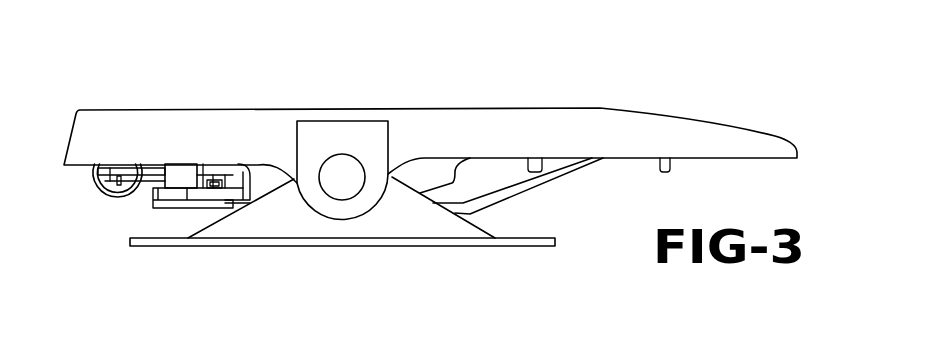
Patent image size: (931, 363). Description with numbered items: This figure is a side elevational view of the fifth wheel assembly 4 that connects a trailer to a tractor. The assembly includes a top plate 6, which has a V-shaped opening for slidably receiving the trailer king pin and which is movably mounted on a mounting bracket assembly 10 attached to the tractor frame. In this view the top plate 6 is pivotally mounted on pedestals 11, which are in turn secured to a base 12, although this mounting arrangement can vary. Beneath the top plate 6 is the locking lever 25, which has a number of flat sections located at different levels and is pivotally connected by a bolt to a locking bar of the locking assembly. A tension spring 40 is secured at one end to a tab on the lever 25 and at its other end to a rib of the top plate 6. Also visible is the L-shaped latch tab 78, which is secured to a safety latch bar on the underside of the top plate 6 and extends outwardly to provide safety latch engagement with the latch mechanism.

The fifth wheel assembly 4 is at (678, 80).
The top plate 6 is at (463, 108).
The mounting bracket assembly 10 is at (330, 240).
The pedestals 11 is at (402, 222).
The base 12 is at (470, 248).
The locking lever 25 is at (522, 192).
The tension spring 40 is at (116, 198).
The latch tab 78 is at (187, 207).